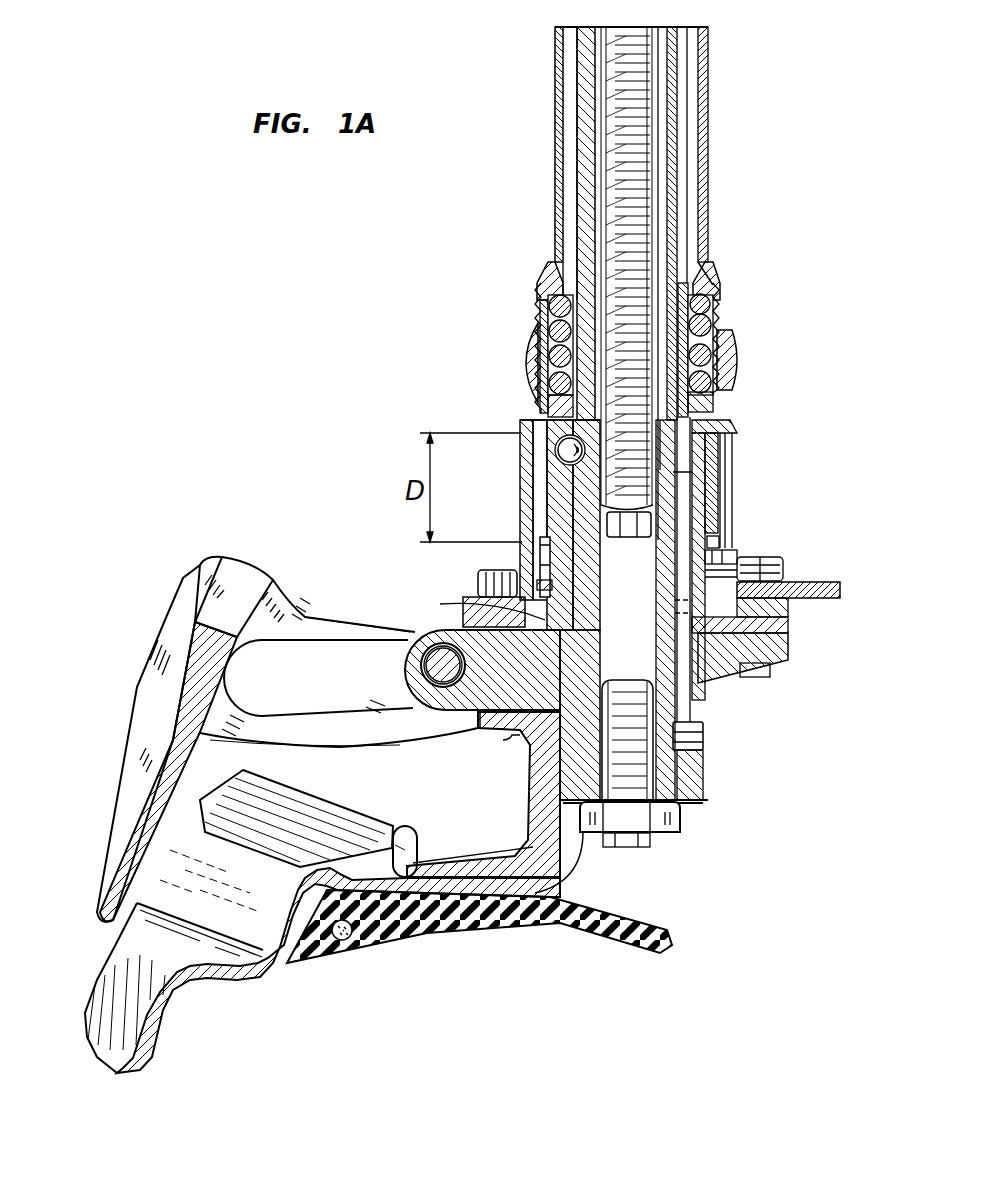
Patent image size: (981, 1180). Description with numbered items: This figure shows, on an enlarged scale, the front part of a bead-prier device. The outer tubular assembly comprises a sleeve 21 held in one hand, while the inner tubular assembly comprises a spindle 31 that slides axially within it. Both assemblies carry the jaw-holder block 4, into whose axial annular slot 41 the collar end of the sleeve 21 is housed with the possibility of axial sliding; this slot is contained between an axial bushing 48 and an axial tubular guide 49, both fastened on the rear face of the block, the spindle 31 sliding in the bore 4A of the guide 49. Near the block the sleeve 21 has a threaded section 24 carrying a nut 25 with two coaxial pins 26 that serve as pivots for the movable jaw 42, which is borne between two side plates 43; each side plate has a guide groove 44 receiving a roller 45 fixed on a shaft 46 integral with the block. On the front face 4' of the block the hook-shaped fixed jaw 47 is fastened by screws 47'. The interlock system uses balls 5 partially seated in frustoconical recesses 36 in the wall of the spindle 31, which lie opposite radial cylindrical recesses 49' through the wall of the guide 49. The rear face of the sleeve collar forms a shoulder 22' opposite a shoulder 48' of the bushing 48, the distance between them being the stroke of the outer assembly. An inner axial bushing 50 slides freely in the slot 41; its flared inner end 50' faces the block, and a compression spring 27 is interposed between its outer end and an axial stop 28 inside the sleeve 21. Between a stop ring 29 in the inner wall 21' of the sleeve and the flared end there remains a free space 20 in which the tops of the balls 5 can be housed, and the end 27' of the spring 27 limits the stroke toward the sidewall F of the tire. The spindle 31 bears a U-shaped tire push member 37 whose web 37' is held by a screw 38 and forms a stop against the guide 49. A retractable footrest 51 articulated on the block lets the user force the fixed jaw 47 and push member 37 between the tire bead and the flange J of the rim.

The sleeve 21 is at (537, 163).
The spindle 31 is at (583, 84).
The axial stop 28 is at (556, 290).
The threaded section 24 is at (546, 298).
The nut 25 is at (524, 332).
The radial cylindrical recesses 49' is at (526, 386).
The shoulder 48' is at (526, 413).
The balls 5 is at (556, 449).
The recesses 36 is at (577, 498).
The bore 4A is at (577, 492).
The axial annular slot 41 is at (543, 515).
The shoulder 22' is at (479, 567).
The axial bushing 48 is at (467, 555).
The jaw-holder block 4 is at (357, 555).
The side plates 43 is at (310, 600).
The guide groove 44 is at (295, 683).
The axial tubular guide 49 is at (484, 715).
The roller 45 is at (412, 688).
The shaft 46 is at (440, 682).
The front face 4' is at (443, 711).
The screws 47' is at (483, 794).
The movable jaw 42 is at (165, 800).
The flange of the rim J is at (405, 843).
The tire push member 37 is at (322, 921).
The fixed jaw 47 is at (579, 867).
The sidewall of the tire F is at (645, 935).
The inner end of the inner axial bushing 50' is at (600, 560).
The inner wall of the sleeve 21' is at (598, 591).
The free space 20 is at (556, 597).
The stop ring 29 is at (580, 622).
The end of the spring 27' is at (726, 333).
The compression spring 27 is at (732, 339).
The coaxial pins 26 is at (737, 338).
The inner axial bushing 50 is at (735, 569).
The retractable footrest 51 is at (812, 582).
The screw 38 is at (682, 760).
The web 37' is at (665, 824).